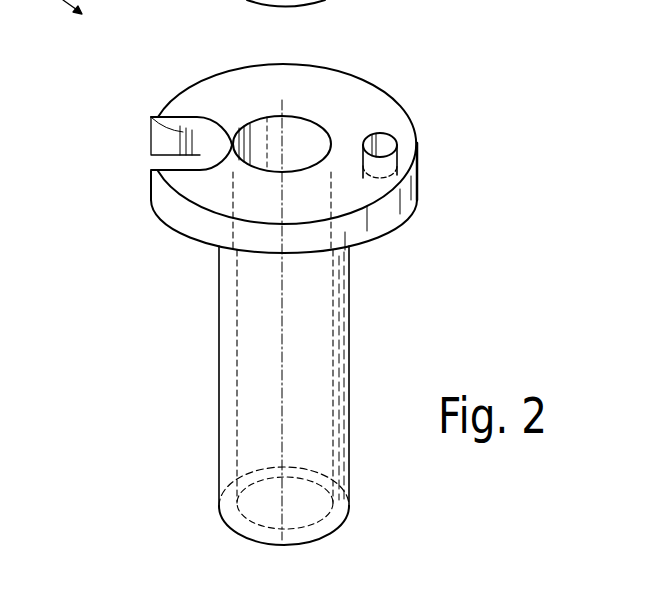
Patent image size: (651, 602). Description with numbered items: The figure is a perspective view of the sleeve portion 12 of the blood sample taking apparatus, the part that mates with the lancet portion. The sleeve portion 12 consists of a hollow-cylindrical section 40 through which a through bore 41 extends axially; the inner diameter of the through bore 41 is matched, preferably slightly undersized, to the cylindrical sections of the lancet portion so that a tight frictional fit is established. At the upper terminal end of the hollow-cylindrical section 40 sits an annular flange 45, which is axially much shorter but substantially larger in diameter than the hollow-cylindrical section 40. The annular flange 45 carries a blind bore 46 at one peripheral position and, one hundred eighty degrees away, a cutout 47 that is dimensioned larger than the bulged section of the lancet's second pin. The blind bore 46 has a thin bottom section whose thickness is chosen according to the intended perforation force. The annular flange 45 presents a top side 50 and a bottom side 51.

The sleeve portion 12 is at (179, 323).
The hollow-cylindrical section 40 is at (221, 452).
The through bore 41 is at (243, 396).
The annular flange 45 is at (372, 100).
The blind bore 46 is at (396, 142).
The cutout 47 is at (152, 118).
The top side 50 is at (310, 79).
The bottom side 51 is at (373, 236).